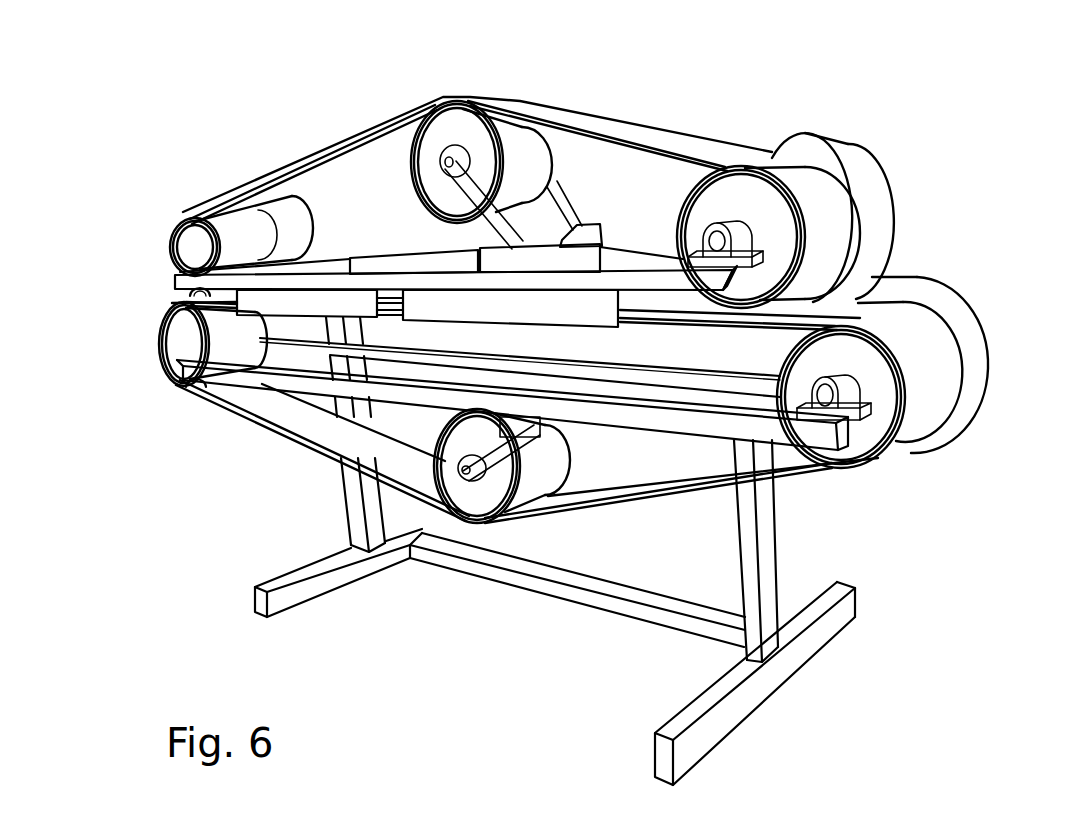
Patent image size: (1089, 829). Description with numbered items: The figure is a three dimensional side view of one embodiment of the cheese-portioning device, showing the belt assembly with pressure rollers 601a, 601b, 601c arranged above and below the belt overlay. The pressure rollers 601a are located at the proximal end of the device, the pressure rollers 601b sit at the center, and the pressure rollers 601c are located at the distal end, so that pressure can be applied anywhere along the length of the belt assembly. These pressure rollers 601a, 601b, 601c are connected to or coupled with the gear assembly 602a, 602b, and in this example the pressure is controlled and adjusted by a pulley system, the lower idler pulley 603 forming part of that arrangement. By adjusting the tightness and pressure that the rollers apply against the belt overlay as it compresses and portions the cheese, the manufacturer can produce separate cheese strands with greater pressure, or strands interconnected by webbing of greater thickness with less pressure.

The pressure roller 601a is at (177, 335).
The pressure roller 601b is at (490, 118).
The pressure roller 601c is at (850, 345).
The gear assembly 602a is at (850, 140).
The gear assembly 602b is at (997, 340).
The lower idler pulley 603 is at (487, 497).